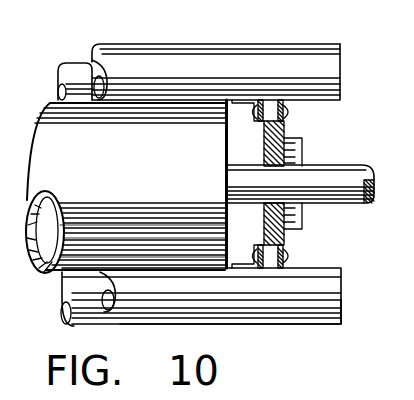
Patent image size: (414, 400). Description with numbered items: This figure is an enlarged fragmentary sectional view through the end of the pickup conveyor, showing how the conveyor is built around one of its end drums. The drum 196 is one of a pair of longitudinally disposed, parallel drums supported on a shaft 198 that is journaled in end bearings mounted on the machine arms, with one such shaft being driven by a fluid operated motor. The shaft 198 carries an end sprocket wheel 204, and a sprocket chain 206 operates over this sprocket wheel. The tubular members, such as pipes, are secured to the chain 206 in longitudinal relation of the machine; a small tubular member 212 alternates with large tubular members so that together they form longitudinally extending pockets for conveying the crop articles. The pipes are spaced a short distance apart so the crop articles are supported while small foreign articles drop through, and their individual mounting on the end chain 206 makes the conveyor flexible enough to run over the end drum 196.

The drum 196 is at (63, 132).
The shaft 198 is at (374, 164).
The end sprocket wheel 204 is at (300, 223).
The sprocket chain 206 is at (285, 122).
The small tubular member 212 is at (320, 283).